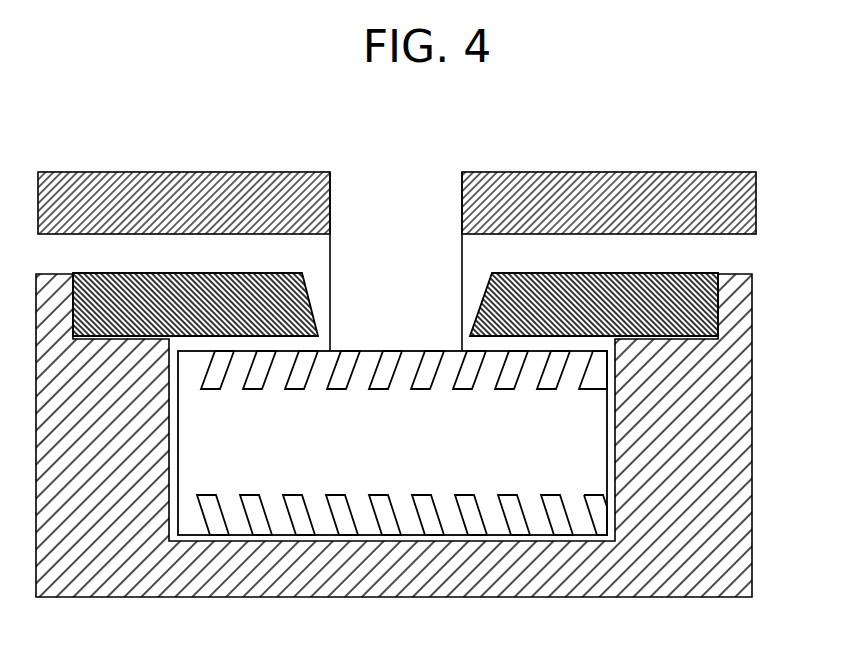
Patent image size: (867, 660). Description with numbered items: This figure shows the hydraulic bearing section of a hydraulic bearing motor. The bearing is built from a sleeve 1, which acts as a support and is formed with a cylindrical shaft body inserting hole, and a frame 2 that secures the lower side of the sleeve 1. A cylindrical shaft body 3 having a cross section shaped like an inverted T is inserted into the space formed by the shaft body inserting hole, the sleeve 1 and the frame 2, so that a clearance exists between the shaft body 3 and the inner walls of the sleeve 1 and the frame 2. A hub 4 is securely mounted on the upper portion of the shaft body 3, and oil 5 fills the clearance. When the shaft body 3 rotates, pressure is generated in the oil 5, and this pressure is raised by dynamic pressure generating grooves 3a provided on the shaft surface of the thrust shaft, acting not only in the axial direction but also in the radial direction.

The sleeve 1 is at (527, 284).
The frame 2 is at (741, 386).
The shaft body 3 is at (377, 185).
The dynamic pressure generating grooves 3a is at (260, 522).
The hub 4 is at (169, 172).
The oil 5 is at (247, 337).